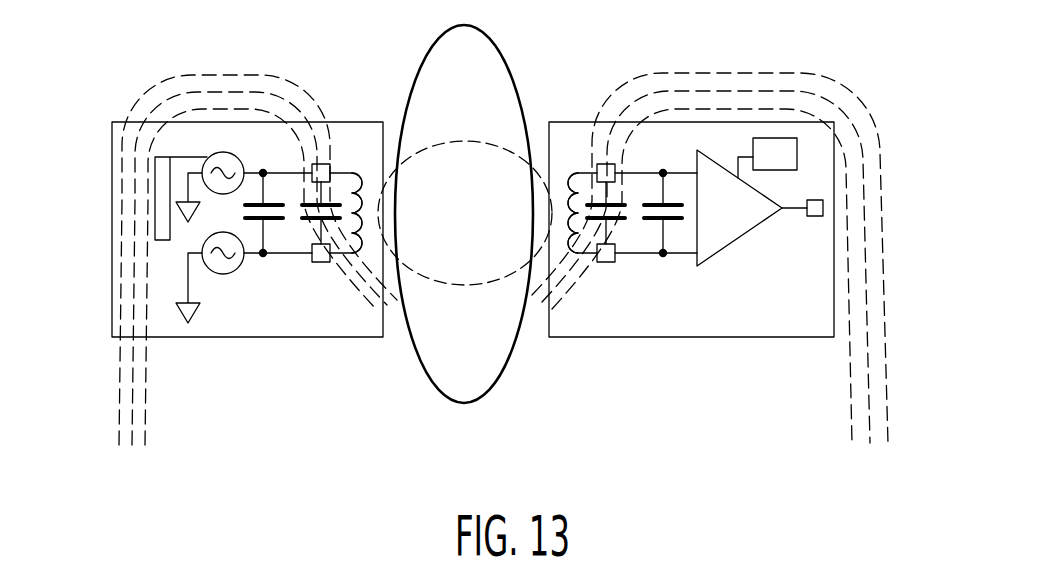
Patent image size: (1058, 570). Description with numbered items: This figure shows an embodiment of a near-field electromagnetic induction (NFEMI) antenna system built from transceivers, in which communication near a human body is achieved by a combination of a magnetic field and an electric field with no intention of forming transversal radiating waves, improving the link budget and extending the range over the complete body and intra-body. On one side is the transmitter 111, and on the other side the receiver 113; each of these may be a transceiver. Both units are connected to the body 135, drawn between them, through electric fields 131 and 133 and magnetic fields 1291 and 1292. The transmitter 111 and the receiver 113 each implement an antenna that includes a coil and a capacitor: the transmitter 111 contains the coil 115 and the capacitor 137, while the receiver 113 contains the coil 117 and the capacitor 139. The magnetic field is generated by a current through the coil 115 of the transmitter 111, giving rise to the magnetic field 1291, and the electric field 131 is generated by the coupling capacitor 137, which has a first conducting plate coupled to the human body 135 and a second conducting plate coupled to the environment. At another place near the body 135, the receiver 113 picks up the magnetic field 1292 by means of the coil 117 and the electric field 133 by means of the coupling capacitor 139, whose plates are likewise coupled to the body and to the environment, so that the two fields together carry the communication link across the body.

The transmitter 111 is at (338, 121).
The receiver 113 is at (720, 122).
The coil 115 is at (359, 186).
The coil 117 is at (572, 170).
The electric field 131 is at (144, 408).
The electric field 133 is at (851, 373).
The body 135 is at (492, 393).
The capacitor 137 is at (309, 221).
The capacitor 139 is at (612, 221).
The magnetic field 1291 is at (356, 258).
The magnetic field 1292 is at (572, 264).